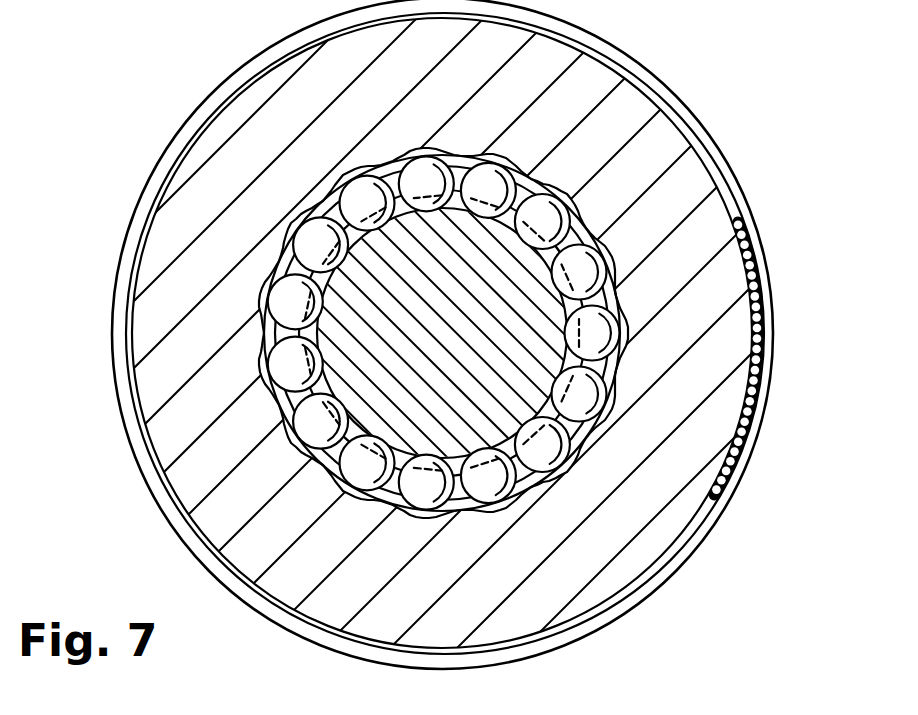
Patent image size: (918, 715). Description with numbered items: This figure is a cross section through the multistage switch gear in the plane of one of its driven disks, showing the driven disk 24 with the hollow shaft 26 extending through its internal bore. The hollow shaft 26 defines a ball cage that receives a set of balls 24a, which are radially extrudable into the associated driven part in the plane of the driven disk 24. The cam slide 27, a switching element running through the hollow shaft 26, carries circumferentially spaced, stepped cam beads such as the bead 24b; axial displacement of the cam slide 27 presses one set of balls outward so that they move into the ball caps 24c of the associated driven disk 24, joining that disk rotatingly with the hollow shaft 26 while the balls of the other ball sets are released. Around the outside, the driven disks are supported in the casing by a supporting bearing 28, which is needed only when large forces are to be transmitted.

The driven disk 24 is at (605, 108).
The set of balls 24a is at (597, 228).
The cam bead 24b is at (562, 400).
The ball caps 24c is at (573, 467).
The hollow shaft 26 is at (610, 302).
The cam slide 27 is at (533, 377).
The supporting bearing 28 is at (757, 259).